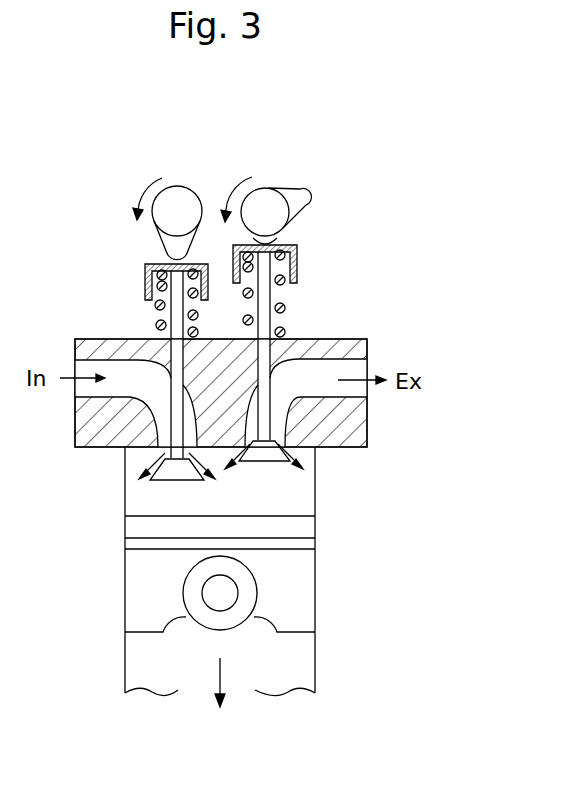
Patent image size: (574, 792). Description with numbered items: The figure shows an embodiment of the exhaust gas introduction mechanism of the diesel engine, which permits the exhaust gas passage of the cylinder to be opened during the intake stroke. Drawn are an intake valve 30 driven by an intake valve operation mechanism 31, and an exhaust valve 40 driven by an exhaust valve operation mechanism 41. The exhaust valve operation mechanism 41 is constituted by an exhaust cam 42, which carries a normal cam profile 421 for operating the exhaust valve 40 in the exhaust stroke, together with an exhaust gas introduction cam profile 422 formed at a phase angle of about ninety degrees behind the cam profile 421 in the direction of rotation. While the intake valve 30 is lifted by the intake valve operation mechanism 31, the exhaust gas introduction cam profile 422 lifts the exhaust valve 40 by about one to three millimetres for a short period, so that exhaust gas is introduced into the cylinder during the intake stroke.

The intake valve 30 is at (177, 318).
The intake valve operation mechanism 31 is at (184, 184).
The exhaust valve 40 is at (270, 295).
The exhaust valve operation mechanism 41 is at (329, 164).
The exhaust cam 42 is at (266, 185).
The normal cam profile 421 is at (315, 196).
The exhaust gas introduction cam profile 422 is at (283, 241).